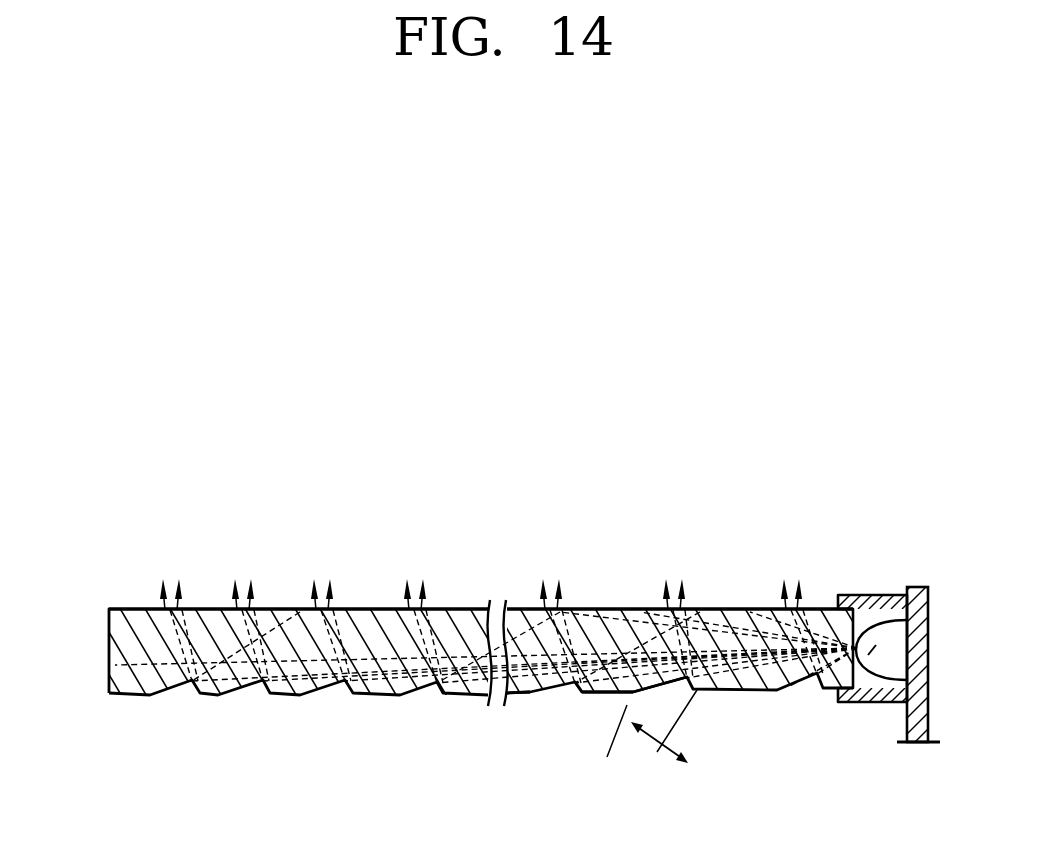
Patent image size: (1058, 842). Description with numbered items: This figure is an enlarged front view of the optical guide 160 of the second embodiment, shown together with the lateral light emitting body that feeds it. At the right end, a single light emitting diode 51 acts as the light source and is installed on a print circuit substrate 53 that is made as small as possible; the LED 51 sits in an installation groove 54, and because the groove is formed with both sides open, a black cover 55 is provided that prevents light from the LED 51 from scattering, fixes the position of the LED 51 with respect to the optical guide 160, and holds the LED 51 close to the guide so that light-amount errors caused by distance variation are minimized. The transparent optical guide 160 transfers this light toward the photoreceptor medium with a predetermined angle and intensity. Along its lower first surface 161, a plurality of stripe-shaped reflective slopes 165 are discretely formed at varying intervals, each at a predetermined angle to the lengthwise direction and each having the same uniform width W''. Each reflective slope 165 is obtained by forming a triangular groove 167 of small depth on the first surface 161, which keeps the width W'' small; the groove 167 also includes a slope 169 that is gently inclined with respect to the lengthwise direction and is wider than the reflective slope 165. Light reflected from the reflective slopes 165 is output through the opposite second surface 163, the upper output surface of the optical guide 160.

The optical guide 160 is at (132, 525).
The first surface 161 is at (740, 700).
The second surface 163 is at (633, 608).
The reflective slope 165 is at (600, 697).
The groove 167 is at (570, 693).
The slope 169 is at (522, 698).
The width W'' is at (652, 730).
The light emitting diode (LED) 51 is at (873, 660).
The print circuit substrate 53 is at (923, 590).
The installation groove 54 is at (867, 597).
The cover 55 is at (889, 612).